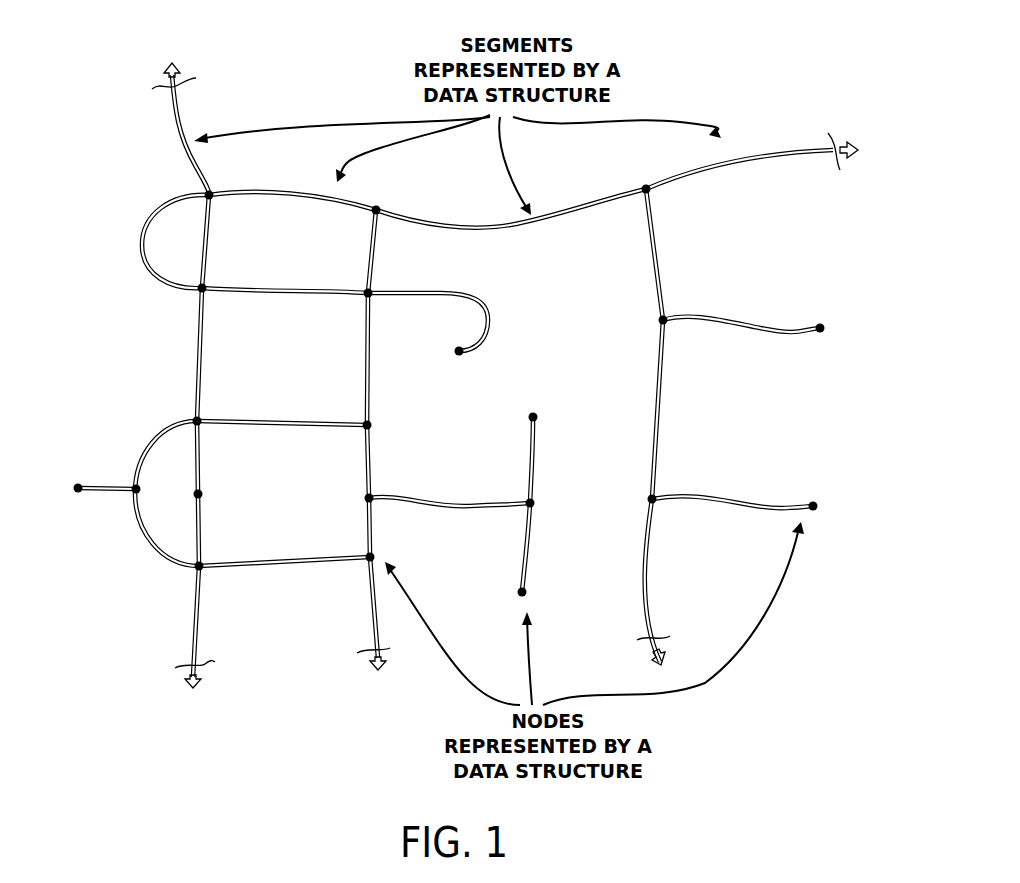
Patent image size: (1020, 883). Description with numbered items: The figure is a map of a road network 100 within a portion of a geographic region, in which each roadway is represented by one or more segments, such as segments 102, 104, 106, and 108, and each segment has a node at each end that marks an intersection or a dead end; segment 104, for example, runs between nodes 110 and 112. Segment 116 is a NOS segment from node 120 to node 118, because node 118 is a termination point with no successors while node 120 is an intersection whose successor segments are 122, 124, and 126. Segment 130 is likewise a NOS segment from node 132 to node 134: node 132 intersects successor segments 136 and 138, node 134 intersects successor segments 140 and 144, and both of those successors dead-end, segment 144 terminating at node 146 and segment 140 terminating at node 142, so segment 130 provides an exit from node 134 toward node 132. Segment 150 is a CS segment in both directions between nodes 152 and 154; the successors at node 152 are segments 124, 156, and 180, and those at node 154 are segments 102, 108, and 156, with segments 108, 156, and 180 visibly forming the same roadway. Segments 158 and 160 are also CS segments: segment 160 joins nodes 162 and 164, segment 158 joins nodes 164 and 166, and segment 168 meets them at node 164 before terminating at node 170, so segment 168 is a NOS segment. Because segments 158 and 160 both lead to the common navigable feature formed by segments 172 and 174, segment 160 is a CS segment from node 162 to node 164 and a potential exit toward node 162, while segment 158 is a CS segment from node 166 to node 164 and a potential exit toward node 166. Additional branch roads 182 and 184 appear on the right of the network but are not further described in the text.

The road network 100 is at (290, 82).
The segment 102 is at (302, 190).
The segment 104 is at (585, 212).
The segment 106 is at (748, 158).
The segment 108 is at (181, 143).
The node 110 is at (379, 208).
The node 112 is at (651, 192).
The segment 116 is at (455, 292).
The node 118 is at (462, 355).
The node 120 is at (372, 289).
The successor segment 122 is at (371, 253).
The successor segment 124 is at (284, 296).
The successor segment 126 is at (370, 352).
The segment 130 is at (461, 503).
The node 132 is at (366, 498).
The node 134 is at (534, 503).
The successor segment 136 is at (370, 452).
The successor segment 138 is at (371, 529).
The successor segment 140 is at (526, 552).
The node 142 is at (526, 592).
The successor segment 144 is at (531, 460).
The node 146 is at (536, 417).
The segment 150 is at (151, 216).
The node 152 is at (200, 292).
The node 154 is at (211, 191).
The segment 156 is at (206, 243).
The segment 158 is at (150, 540).
The segment 160 is at (147, 448).
The node 162 is at (201, 421).
The node 164 is at (135, 487).
The node 166 is at (197, 569).
The segment 168 is at (112, 494).
The node 170 is at (78, 491).
The segment 172 is at (200, 462).
The segment 174 is at (201, 530).
The segment 180 is at (200, 353).
The road segment 182 is at (712, 496).
The road segment 184 is at (712, 318).